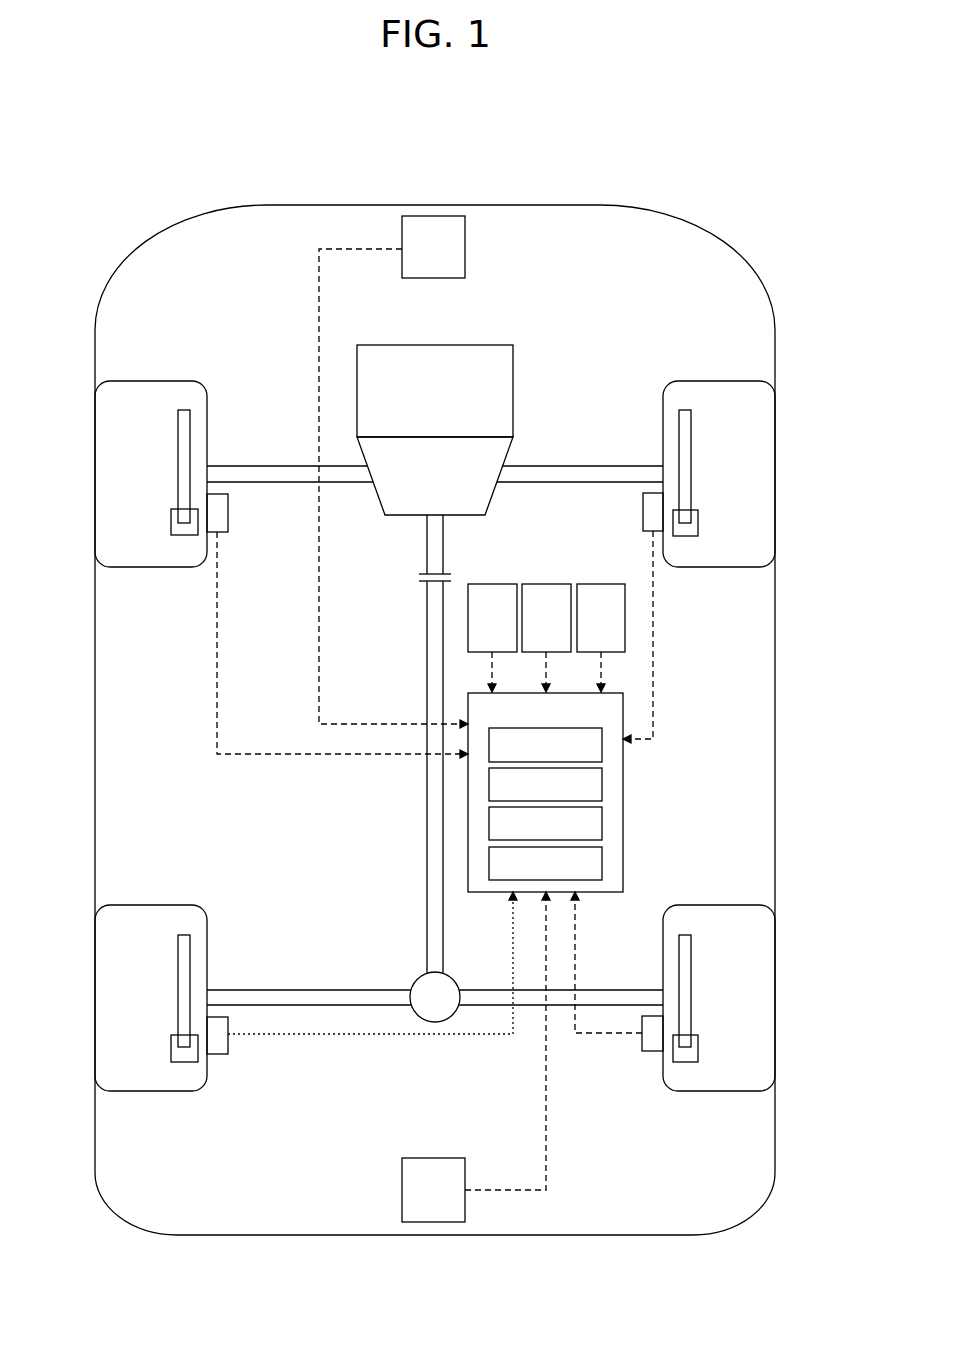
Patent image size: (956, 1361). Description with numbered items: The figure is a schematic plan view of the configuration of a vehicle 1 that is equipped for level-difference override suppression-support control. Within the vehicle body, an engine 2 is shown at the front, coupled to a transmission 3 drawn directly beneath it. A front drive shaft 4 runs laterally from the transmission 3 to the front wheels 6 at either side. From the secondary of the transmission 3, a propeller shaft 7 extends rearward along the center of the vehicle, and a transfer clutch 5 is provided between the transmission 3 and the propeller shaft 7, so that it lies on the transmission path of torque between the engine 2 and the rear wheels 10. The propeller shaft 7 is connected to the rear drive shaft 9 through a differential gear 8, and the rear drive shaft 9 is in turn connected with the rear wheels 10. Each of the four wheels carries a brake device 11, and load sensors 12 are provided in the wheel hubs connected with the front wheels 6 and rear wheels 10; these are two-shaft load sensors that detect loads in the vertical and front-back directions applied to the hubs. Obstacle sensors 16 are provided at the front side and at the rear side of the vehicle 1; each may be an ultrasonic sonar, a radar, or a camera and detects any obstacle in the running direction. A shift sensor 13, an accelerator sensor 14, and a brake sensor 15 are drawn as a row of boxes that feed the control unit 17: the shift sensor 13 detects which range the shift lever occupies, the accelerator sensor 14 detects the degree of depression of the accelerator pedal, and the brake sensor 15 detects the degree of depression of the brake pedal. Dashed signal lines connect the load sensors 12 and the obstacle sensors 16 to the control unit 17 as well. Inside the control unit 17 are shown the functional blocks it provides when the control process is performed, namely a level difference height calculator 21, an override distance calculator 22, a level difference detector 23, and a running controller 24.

The vehicle 1 is at (449, 144).
The engine 2 is at (426, 403).
The transmission 3 is at (426, 491).
The front drive shaft 4 is at (567, 466).
The transfer clutch 5 is at (423, 583).
The front wheels 6 is at (152, 380).
The propeller shaft 7 is at (427, 826).
The differential gear 8 is at (418, 980).
The rear drive shaft 9 is at (312, 989).
The rear wheels 10 is at (152, 905).
The brake devices 11 is at (178, 535).
The load sensors 12 is at (228, 512).
The shift sensor 13 is at (476, 633).
The accelerator sensor 14 is at (530, 633).
The brake sensor 15 is at (585, 633).
The obstacle sensors 16 is at (417, 260).
The control unit 17 is at (529, 722).
The level difference height calculator 21 is at (529, 757).
The override distance calculator 22 is at (529, 797).
The level difference detector 23 is at (529, 836).
The running controller 24 is at (529, 876).